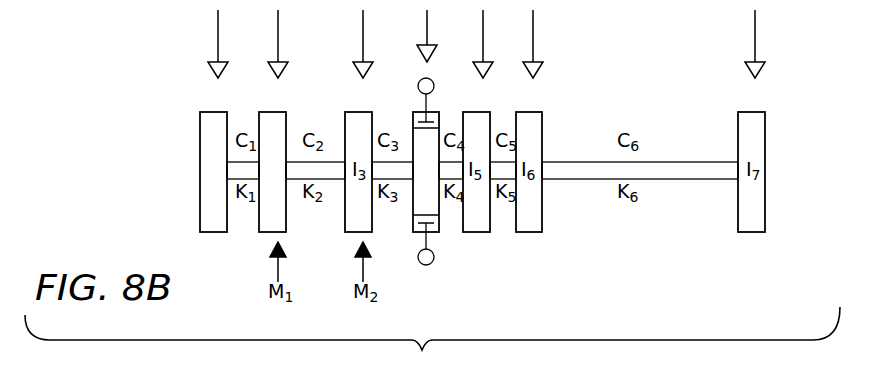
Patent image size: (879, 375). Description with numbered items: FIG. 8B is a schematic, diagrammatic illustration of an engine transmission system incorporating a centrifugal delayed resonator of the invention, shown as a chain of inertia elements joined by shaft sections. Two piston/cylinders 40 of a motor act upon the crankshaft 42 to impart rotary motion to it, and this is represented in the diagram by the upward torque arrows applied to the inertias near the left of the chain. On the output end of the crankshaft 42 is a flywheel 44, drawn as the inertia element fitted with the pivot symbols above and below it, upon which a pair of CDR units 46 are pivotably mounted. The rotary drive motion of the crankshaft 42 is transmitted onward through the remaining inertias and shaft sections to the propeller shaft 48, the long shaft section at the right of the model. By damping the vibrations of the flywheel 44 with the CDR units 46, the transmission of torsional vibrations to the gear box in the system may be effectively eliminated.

The piston/cylinders 40 is at (258, 232).
The crankshaft 42 is at (337, 180).
The flywheel 44 is at (439, 207).
The CDR units 46 is at (431, 80).
The propeller shaft 48 is at (580, 180).